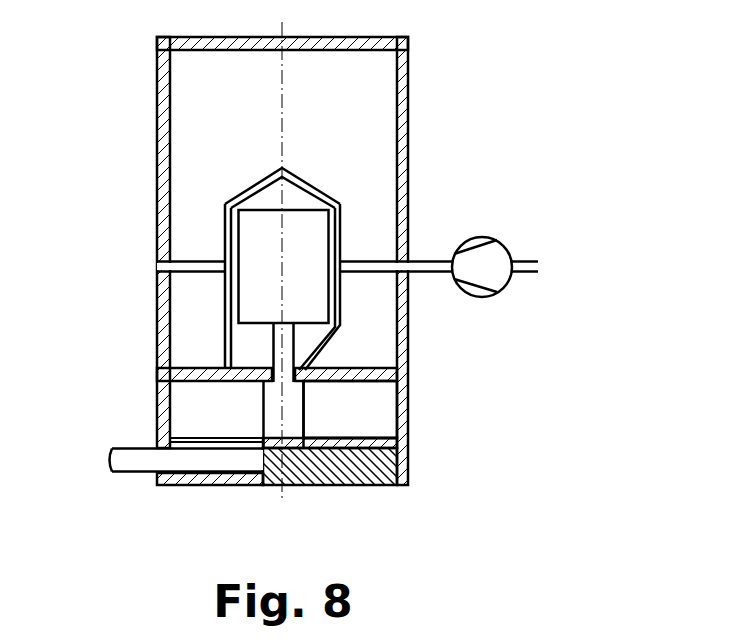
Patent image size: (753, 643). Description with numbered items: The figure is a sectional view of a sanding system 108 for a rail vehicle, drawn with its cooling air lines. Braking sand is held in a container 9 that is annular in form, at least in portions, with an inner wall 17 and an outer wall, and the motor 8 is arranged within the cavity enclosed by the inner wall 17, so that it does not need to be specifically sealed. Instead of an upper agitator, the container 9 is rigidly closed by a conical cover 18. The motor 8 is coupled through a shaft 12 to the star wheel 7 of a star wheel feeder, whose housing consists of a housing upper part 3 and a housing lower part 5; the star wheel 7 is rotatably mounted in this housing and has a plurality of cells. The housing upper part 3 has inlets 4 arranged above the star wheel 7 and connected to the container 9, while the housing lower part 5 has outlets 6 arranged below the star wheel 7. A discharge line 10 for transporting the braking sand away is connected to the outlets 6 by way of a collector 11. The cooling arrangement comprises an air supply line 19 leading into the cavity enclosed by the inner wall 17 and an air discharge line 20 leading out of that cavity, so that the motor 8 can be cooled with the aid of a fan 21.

The sanding system 108 is at (582, 130).
The container 9 is at (403, 108).
The motor 8 is at (308, 225).
The inner wall 17 is at (223, 220).
The conical cover 18 is at (258, 185).
The air supply line 19 is at (422, 270).
The air discharge line 20 is at (165, 267).
The fan 21 is at (495, 259).
The shaft 12 is at (287, 357).
The housing upper part 3 is at (158, 382).
The inlets 4 is at (368, 378).
The outlets 6 is at (187, 447).
The star wheel 7 is at (383, 402).
The housing lower part 5 is at (397, 447).
The discharge line 10 is at (133, 462).
The collector 11 is at (398, 480).